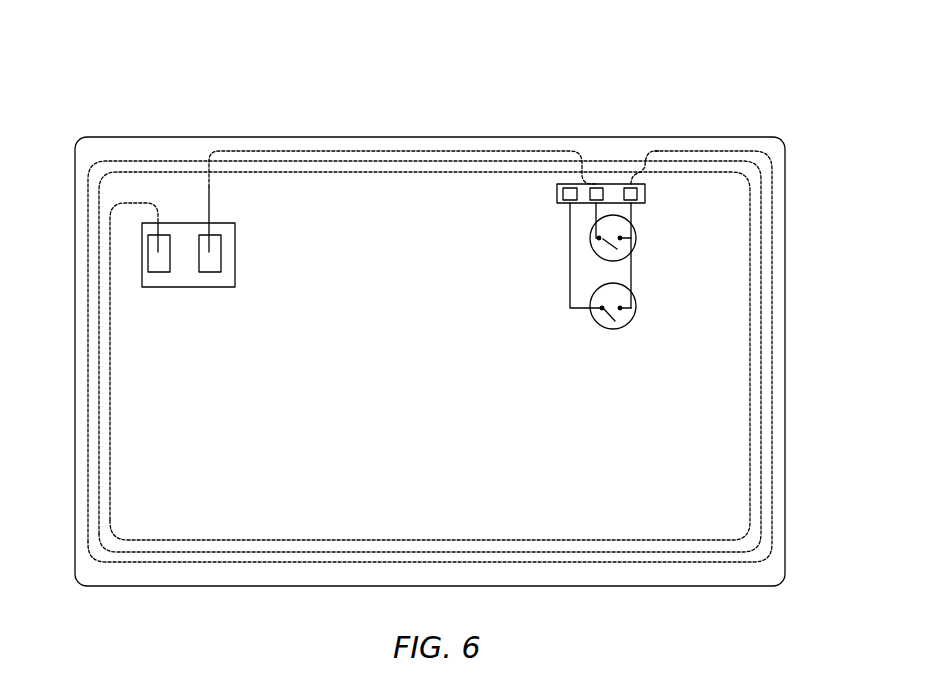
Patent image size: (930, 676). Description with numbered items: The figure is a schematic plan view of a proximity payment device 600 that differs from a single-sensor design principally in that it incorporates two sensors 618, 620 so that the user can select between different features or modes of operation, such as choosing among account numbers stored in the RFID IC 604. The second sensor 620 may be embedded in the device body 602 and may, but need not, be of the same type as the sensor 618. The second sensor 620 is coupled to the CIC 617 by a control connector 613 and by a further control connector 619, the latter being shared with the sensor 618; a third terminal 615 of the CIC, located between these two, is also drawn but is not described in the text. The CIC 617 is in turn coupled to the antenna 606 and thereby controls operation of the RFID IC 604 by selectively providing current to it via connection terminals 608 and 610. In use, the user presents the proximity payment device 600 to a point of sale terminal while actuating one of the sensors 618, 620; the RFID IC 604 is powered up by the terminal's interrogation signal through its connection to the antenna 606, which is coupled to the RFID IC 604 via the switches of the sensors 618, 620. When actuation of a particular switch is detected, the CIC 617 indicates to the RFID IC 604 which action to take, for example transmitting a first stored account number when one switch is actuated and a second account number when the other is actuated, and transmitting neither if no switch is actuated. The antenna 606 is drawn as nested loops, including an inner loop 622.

The proximity payment device 600 is at (620, 78).
The device body 602 is at (437, 199).
The RFID IC 604 is at (142, 246).
The antenna 606 is at (717, 152).
The connection terminal 608 is at (149, 273).
The connection terminal 610 is at (221, 268).
The control connector 613 is at (557, 195).
The second capacitor 615 is at (596, 184).
The CIC 617 is at (645, 198).
The sensor 618 is at (636, 240).
The control connector 619 is at (609, 193).
The second sensor 620 is at (636, 308).
The inner loop of antenna coil 622 is at (707, 308).